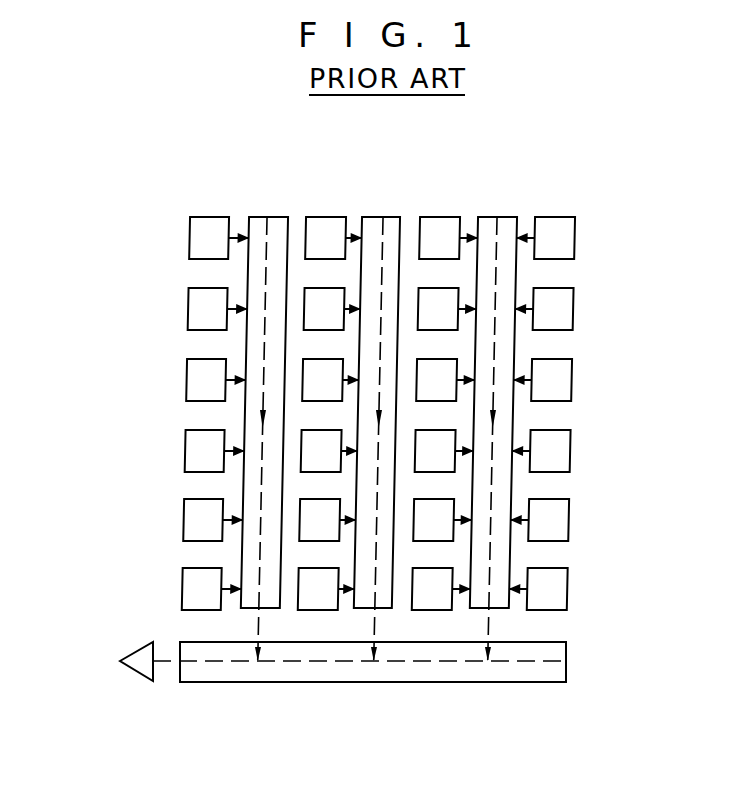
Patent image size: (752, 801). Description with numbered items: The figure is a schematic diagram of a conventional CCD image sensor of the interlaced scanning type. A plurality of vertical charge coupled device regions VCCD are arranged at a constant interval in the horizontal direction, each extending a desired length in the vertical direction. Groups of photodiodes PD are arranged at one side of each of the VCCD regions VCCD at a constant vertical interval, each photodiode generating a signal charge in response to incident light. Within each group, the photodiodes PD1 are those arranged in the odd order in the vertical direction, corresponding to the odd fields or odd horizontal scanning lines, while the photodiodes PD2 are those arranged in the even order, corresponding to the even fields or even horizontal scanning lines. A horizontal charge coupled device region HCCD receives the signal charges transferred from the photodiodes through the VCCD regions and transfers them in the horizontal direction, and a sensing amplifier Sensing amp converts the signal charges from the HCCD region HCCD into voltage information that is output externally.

The vertical charge coupled device region VCCD is at (372, 220).
The horizontal charge coupled device region HCCD is at (554, 657).
The photodiode PD is at (90, 398).
The photodiode arranged in the odd order PD1 is at (190, 317).
The photodiode arranged in the even order PD2 is at (187, 380).
The sensing amplifier Sensing amp is at (144, 667).